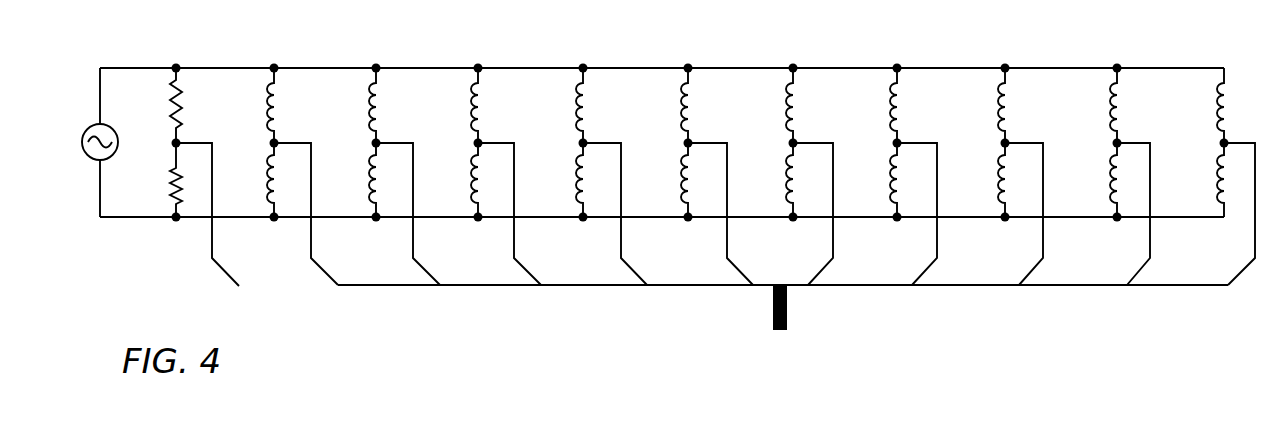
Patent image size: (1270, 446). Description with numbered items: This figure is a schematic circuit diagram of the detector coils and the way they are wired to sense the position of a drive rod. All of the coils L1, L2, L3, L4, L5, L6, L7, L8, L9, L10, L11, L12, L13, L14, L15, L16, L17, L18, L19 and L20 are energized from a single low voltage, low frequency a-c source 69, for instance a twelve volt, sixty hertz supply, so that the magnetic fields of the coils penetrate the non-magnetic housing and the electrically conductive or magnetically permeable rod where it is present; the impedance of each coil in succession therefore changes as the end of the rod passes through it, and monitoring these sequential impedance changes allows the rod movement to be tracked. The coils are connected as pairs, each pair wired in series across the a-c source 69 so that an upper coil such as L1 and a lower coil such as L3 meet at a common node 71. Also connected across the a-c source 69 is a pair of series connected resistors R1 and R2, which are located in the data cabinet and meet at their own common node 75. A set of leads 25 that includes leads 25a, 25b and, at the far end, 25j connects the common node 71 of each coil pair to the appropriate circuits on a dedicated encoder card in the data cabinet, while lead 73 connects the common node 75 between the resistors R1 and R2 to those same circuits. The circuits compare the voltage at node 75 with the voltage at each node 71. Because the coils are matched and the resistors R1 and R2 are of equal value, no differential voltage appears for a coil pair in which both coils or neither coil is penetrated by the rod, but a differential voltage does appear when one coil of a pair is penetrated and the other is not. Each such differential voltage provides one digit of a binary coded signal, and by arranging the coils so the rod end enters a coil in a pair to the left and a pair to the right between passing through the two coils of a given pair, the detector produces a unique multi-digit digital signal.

The a-c source 69 is at (99, 123).
The resistor R1 is at (170, 98).
The resistor R2 is at (171, 182).
The common node 75 is at (178, 141).
The common node 71 is at (276, 141).
The lead 73 is at (216, 236).
The lead 25a is at (315, 237).
The lead 25b is at (417, 237).
The lead 25j is at (1253, 236).
The leads 25 is at (788, 307).
The coil L1 is at (264, 96).
The coil L2 is at (368, 98).
The coil L3 is at (266, 180).
The coil L4 is at (470, 94).
The coil L5 is at (368, 180).
The coil L6 is at (574, 94).
The coil L7 is at (471, 182).
The coil L8 is at (679, 96).
The coil L9 is at (574, 178).
The coil L10 is at (784, 94).
The coil L11 is at (679, 172).
The coil L12 is at (888, 94).
The coil L13 is at (784, 172).
The coil L14 is at (996, 94).
The coil L15 is at (888, 171).
The coil L16 is at (1108, 94).
The coil L17 is at (996, 171).
The coil L18 is at (1215, 94).
The coil L19 is at (1104, 171).
The coil L20 is at (1215, 175).